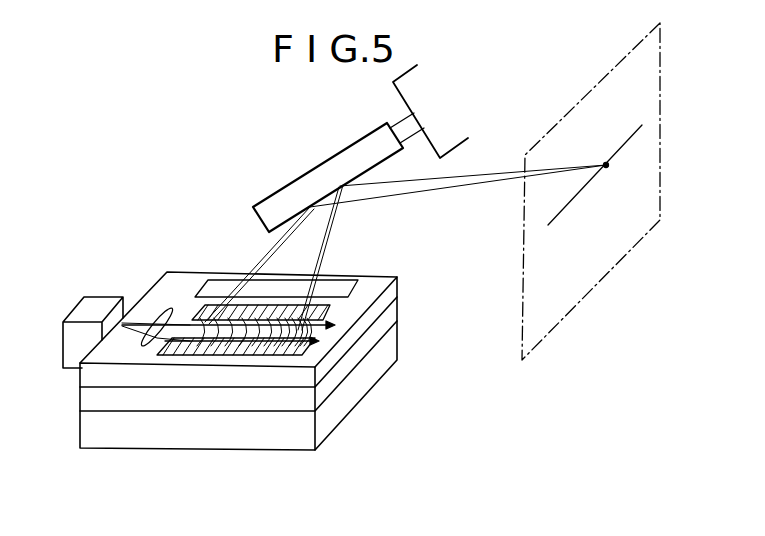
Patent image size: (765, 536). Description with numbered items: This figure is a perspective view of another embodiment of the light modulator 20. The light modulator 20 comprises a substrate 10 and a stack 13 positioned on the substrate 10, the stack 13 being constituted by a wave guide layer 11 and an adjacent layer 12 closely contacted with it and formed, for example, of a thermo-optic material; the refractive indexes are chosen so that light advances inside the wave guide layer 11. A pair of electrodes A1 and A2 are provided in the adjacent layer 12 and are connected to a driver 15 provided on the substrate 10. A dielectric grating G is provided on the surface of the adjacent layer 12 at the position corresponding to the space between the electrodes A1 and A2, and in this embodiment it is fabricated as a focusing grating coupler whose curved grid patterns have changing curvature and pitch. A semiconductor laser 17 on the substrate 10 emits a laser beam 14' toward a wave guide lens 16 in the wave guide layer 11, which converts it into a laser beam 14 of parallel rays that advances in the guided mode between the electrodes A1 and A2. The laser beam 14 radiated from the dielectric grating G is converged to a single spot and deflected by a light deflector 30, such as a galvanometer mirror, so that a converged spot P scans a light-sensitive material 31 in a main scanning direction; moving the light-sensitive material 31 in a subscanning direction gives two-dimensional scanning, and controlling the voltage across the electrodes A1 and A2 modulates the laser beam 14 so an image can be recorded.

The substrate 10 is at (283, 436).
The wave guide layer 11 is at (322, 397).
The adjacent layer 12 is at (327, 368).
The stack 13 is at (404, 398).
The laser beam 14 is at (405, 247).
The laser beam 14' is at (149, 292).
The driver 15 is at (217, 292).
The wave guide lens 16 is at (143, 346).
The semiconductor laser 17 is at (87, 312).
The light modulator 20 is at (181, 250).
The light deflector 30 is at (283, 197).
The light-sensitive material 31 is at (580, 102).
The electrode A1 is at (290, 306).
The electrode A2 is at (192, 349).
The dielectric grating G is at (228, 338).
The converged spot P is at (607, 168).